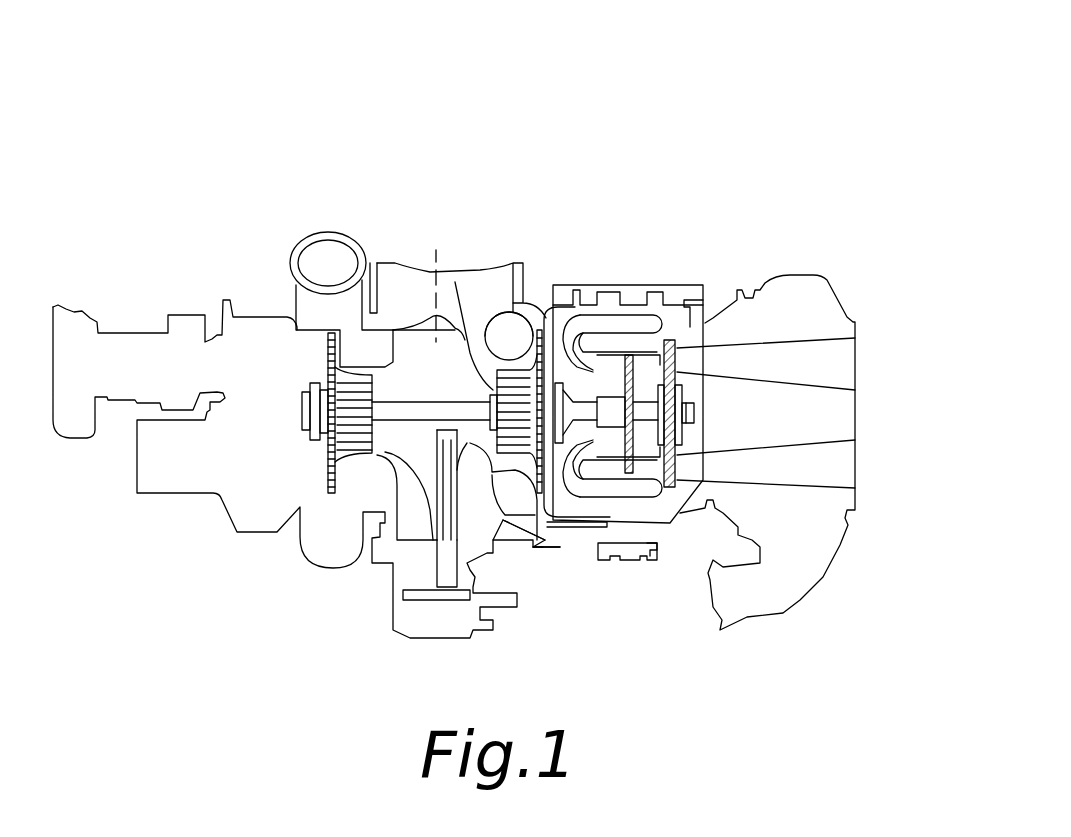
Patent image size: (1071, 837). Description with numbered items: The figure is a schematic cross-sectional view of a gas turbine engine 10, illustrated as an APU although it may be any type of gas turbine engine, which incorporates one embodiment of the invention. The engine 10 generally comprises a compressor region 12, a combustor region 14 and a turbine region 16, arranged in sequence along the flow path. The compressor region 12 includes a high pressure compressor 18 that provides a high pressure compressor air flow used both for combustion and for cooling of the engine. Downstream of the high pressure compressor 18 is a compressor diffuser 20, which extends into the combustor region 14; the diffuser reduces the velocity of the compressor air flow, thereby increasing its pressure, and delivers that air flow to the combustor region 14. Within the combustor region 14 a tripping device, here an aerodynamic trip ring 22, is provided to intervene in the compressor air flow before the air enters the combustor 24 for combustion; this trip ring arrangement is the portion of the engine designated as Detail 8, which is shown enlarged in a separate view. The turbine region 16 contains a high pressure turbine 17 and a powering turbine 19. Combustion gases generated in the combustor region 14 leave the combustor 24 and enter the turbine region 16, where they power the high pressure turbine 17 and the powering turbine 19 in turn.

The gas turbine engine 10 is at (580, 198).
The Detail 8 is at (680, 283).
The compressor region 12 is at (498, 320).
The combustor region 14 is at (635, 290).
The turbine region 16 is at (717, 393).
The high pressure turbine 17 is at (622, 382).
The high pressure compressor 18 is at (455, 282).
The powering turbine 19 is at (680, 440).
The compressor diffuser 20 is at (553, 540).
The aerodynamic trip ring 22 is at (617, 543).
The combustor 24 is at (652, 505).